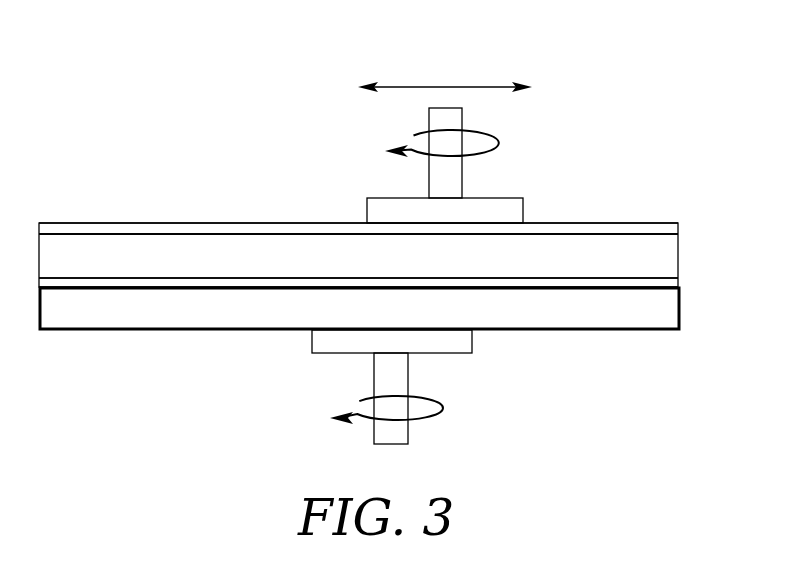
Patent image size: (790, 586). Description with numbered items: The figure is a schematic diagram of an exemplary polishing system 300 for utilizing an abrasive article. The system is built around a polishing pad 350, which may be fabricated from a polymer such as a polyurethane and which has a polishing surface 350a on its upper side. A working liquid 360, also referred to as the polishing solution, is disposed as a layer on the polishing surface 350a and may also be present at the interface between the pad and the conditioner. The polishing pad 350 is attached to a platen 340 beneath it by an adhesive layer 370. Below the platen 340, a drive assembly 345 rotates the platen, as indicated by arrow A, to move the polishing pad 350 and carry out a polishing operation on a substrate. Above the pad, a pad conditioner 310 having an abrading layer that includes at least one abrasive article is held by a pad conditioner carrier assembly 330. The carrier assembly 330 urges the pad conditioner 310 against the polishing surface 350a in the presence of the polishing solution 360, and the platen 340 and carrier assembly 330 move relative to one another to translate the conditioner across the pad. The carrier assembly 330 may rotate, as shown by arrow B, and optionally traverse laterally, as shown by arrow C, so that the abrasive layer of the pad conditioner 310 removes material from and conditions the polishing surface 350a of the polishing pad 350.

The polishing system 300 is at (640, 84).
The pad conditioner 310 is at (508, 230).
The pad conditioner carrier assembly 330 is at (502, 207).
The platen 340 is at (618, 318).
The drive assembly 345 is at (462, 382).
The polishing pad 350 is at (215, 252).
The polishing surface 350a is at (290, 236).
The working liquid 360 is at (148, 230).
The adhesive layer 370 is at (75, 281).
The arrow A is at (428, 420).
The arrow B is at (495, 142).
The arrow C is at (447, 85).